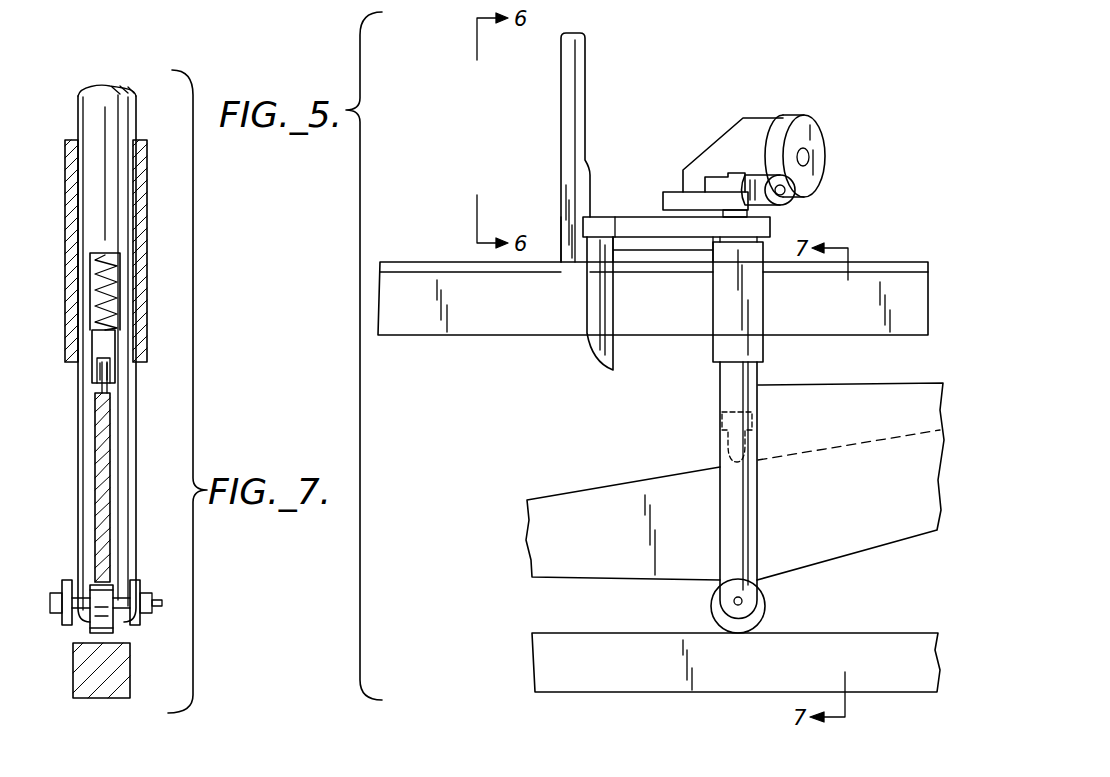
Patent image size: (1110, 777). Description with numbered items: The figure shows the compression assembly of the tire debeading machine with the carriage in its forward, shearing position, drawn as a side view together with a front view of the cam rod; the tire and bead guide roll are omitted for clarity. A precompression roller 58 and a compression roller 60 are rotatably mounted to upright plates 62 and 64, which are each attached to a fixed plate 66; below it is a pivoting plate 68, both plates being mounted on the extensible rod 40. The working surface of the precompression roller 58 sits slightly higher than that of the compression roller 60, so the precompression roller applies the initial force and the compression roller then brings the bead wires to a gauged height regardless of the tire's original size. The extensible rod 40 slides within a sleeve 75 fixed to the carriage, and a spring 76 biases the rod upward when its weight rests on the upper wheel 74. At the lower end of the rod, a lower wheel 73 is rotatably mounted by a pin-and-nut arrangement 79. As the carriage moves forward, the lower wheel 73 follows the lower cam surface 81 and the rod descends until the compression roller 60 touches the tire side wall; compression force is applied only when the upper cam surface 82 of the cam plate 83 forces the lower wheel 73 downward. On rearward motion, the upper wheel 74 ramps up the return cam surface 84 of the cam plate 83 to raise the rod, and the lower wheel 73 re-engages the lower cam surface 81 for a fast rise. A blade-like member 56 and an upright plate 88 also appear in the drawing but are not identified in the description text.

In FIG. 7, the extensible rod 40 is at (90, 190).
In FIG. 5, the extensible rod 40 is at (745, 530).
In FIG. 5, the blade 56 is at (597, 333).
In FIG. 5, the precompression roller 58 is at (808, 120).
In FIG. 5, the compression roller 60 is at (790, 196).
In FIG. 5, the upright plate 62 is at (768, 120).
In FIG. 5, the upright plate 64 is at (725, 180).
In FIG. 5, the fixed plate 66 is at (676, 195).
In FIG. 5, the pivoting plate 68 is at (650, 222).
In FIG. 7, the lower wheel 73 is at (113, 625).
In FIG. 5, the lower wheel 73 is at (725, 622).
In FIG. 7, the upper wheel 74 is at (95, 385).
In FIG. 5, the upper wheel 74 is at (745, 440).
In FIG. 7, the sleeve 75 is at (70, 238).
In FIG. 5, the sleeve 75 is at (757, 345).
In FIG. 7, the spring 76 is at (97, 302).
In FIG. 7, the pin-and-nut arrangement 79 is at (57, 593).
In FIG. 7, the lower cam surface 81 is at (85, 640).
In FIG. 5, the lower cam surface 81 is at (625, 633).
In FIG. 5, the upper cam surface 82 is at (812, 565).
In FIG. 7, the cam plate 83 is at (100, 478).
In FIG. 5, the cam plate 83 is at (640, 548).
In FIG. 5, the return cam surface 84 is at (620, 483).
In FIG. 5, the guide plate 88 is at (568, 98).